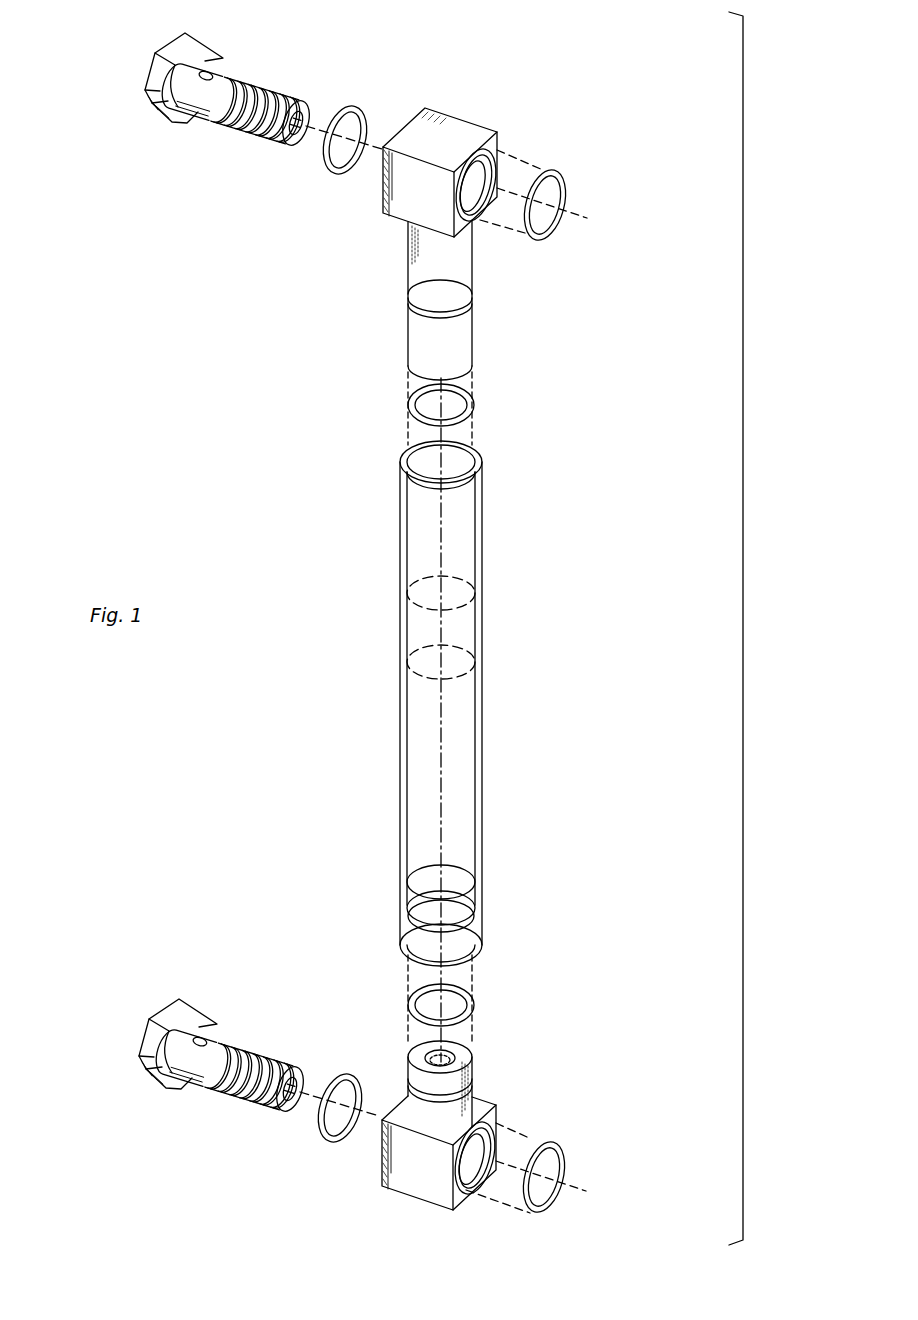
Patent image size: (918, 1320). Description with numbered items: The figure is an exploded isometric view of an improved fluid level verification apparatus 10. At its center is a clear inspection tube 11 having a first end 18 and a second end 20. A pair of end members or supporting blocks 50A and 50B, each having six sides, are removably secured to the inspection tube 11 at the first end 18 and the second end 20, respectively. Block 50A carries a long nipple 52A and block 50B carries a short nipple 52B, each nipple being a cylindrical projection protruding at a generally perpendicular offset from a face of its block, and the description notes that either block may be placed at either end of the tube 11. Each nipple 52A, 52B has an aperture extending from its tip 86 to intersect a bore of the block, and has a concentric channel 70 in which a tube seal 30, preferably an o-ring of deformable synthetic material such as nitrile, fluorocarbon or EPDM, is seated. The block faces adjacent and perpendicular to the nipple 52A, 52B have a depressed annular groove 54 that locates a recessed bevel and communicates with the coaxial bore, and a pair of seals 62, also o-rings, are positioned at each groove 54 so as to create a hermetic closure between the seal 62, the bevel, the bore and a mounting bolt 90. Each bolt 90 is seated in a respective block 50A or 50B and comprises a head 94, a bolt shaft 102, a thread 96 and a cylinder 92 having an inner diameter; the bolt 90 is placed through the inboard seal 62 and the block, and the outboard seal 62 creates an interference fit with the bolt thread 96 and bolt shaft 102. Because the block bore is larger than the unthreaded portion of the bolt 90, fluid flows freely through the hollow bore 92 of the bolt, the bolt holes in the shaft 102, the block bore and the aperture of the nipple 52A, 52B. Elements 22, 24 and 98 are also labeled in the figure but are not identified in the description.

The fluid level verification apparatus 10 is at (599, 401).
The clear inspection tube 11 is at (483, 829).
The first end 18 is at (402, 454).
The second end 20 is at (478, 962).
The tube bore 22 is at (408, 562).
The seal groove ring 24 is at (407, 922).
The tube seal 30 is at (472, 420).
The long nipple block 50A is at (447, 121).
The short nipple block 50B is at (408, 1178).
The long nipple 52A is at (457, 372).
The short nipple 52B is at (472, 1043).
The depressed annular groove 54 is at (500, 157).
The seal 62 is at (563, 185).
The concentric channel 70 is at (402, 295).
The tip 86 is at (418, 1053).
The mounting bolt 90 is at (147, 90).
The cylinder 92 is at (312, 108).
The bolt head 94 is at (170, 42).
The bolt thread 96 is at (263, 140).
The bolt sealing washer 98 is at (345, 176).
The bolt shaft 102 is at (203, 118).